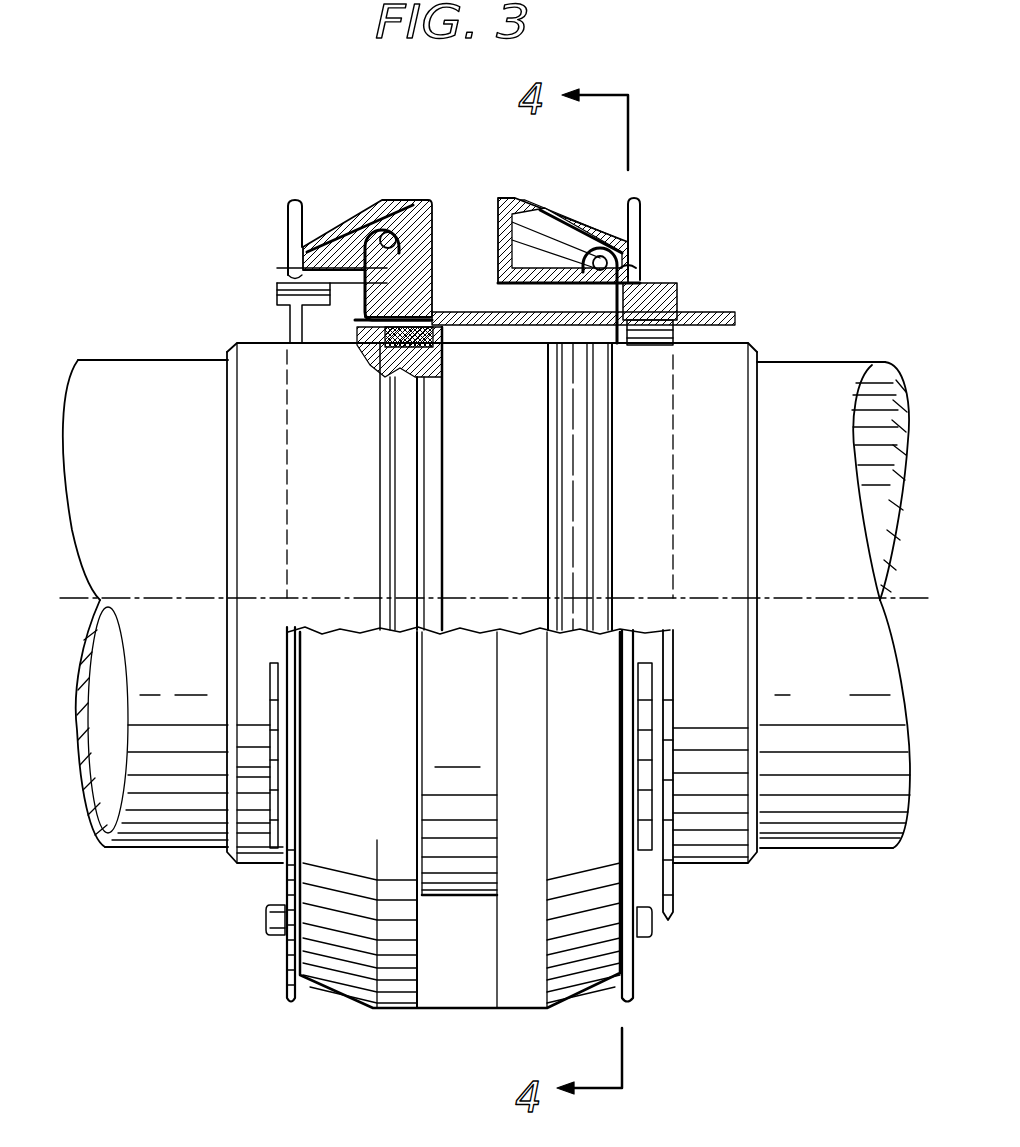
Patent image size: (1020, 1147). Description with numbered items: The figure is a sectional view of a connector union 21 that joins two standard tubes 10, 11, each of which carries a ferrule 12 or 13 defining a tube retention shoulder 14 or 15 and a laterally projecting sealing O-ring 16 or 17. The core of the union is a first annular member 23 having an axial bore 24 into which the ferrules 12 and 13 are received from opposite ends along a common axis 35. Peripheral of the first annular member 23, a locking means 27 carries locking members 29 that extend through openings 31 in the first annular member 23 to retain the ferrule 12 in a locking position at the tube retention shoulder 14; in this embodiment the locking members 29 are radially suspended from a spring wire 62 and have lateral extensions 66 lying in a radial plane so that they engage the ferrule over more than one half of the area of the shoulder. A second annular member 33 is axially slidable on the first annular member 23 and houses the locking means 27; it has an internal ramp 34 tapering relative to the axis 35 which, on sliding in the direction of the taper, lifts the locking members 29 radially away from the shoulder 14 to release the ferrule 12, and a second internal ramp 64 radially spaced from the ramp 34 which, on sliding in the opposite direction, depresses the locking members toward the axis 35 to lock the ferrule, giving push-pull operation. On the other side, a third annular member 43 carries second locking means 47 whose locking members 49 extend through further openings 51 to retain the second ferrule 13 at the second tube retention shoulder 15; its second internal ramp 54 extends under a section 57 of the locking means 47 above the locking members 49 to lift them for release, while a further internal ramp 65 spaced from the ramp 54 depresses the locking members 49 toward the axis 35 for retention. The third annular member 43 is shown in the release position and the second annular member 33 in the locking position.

The tube 10 is at (830, 696).
The tube 11 is at (178, 684).
The ferrule 12 is at (548, 423).
The ferrule 13 is at (382, 457).
The tube retention shoulder 14 is at (613, 412).
The tube retention shoulder 15 is at (378, 528).
The sealing O-ring 16 is at (573, 372).
The sealing O-ring 17 is at (420, 490).
The connector union 21 is at (250, 908).
The first annular member 23 is at (475, 704).
The axial bore 24 is at (504, 569).
The locking means 27 is at (640, 262).
The locking members 29 is at (655, 290).
The openings 31 is at (670, 323).
The second annular member 33 is at (648, 196).
The internal ramp 34 is at (555, 247).
The axis 35 is at (890, 598).
The third annular member 43 is at (290, 195).
The second locking means 47 is at (382, 270).
The second locking members 49 is at (345, 298).
The further openings 51 is at (372, 330).
The second internal ramp 54 is at (335, 267).
The section of second locking means 57 is at (397, 227).
The spring wire 62 is at (583, 240).
The second internal ramp 64 is at (560, 212).
The second internal ramp 65 is at (357, 222).
The lateral extensions 66 is at (613, 358).